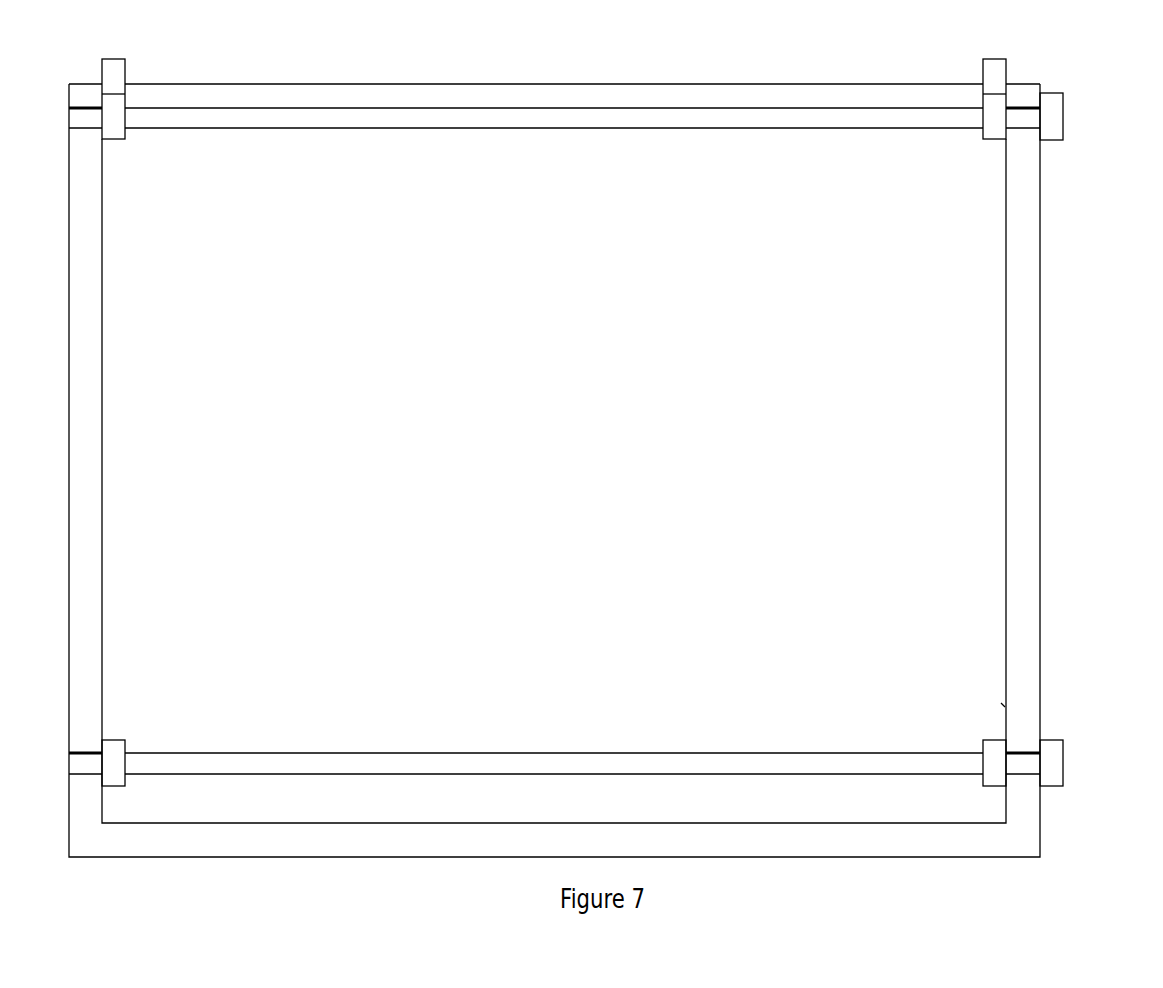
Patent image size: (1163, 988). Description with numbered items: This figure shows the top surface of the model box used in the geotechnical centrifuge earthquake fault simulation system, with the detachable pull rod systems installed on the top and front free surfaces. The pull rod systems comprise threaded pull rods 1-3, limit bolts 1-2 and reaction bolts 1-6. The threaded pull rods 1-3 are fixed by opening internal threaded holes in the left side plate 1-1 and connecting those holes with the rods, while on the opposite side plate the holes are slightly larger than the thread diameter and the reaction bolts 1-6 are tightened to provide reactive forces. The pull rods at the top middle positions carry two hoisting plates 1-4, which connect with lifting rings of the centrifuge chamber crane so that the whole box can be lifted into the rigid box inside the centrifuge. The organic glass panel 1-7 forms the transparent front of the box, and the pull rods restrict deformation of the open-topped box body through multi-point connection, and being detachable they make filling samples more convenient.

The left side plate 1-1 is at (93, 193).
The limit bolts 1-2 is at (139, 113).
The threaded pull rods 1-3 is at (565, 117).
The hoisting plates 1-4 is at (992, 73).
The reaction bolts 1-6 is at (1052, 115).
The organic glass panel 1-7 is at (608, 145).